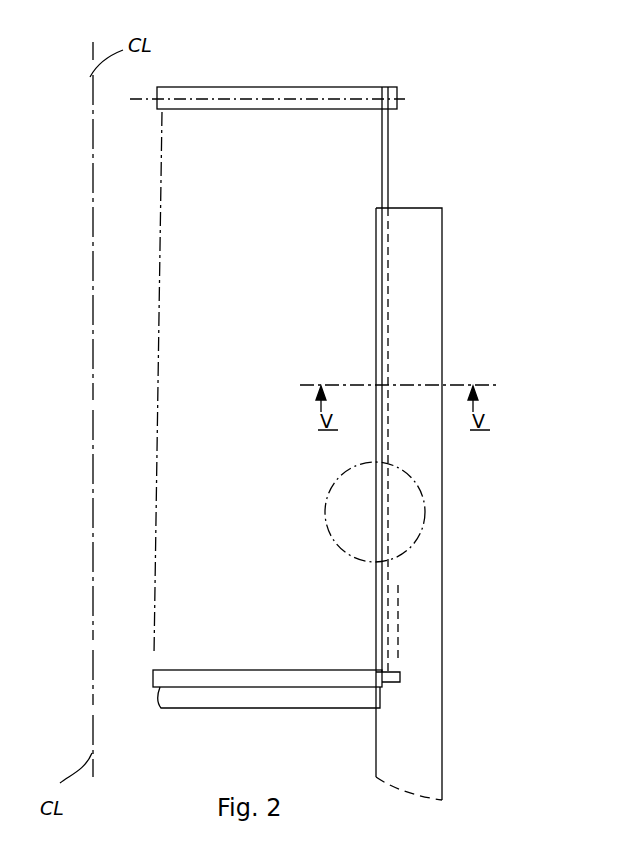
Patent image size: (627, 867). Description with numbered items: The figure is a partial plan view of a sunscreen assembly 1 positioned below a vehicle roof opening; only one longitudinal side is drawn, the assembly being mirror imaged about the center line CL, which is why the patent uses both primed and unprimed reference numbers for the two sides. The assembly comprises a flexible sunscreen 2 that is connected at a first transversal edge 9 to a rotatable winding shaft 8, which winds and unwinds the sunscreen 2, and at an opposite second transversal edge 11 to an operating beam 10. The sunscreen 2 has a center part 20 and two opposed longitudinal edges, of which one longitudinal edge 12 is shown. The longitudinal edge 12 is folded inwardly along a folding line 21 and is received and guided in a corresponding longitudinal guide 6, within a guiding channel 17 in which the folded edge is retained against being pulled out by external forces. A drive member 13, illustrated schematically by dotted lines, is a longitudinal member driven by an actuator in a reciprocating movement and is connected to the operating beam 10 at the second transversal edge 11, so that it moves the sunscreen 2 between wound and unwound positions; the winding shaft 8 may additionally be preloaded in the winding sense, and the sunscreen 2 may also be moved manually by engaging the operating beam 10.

The sunscreen assembly 1 is at (301, 394).
The flexible sunscreen 2 is at (180, 335).
The longitudinal guide 6 is at (456, 504).
The winding shaft 8 is at (350, 90).
The first transversal edge 9 is at (253, 87).
The operating beam 10 is at (160, 700).
The second transversal edge 11 is at (170, 670).
The longitudinal edge 12 is at (390, 190).
The drive member 13 is at (402, 655).
The guiding channel 17 is at (387, 446).
The center part 20 is at (343, 165).
The folding line 21 is at (388, 258).